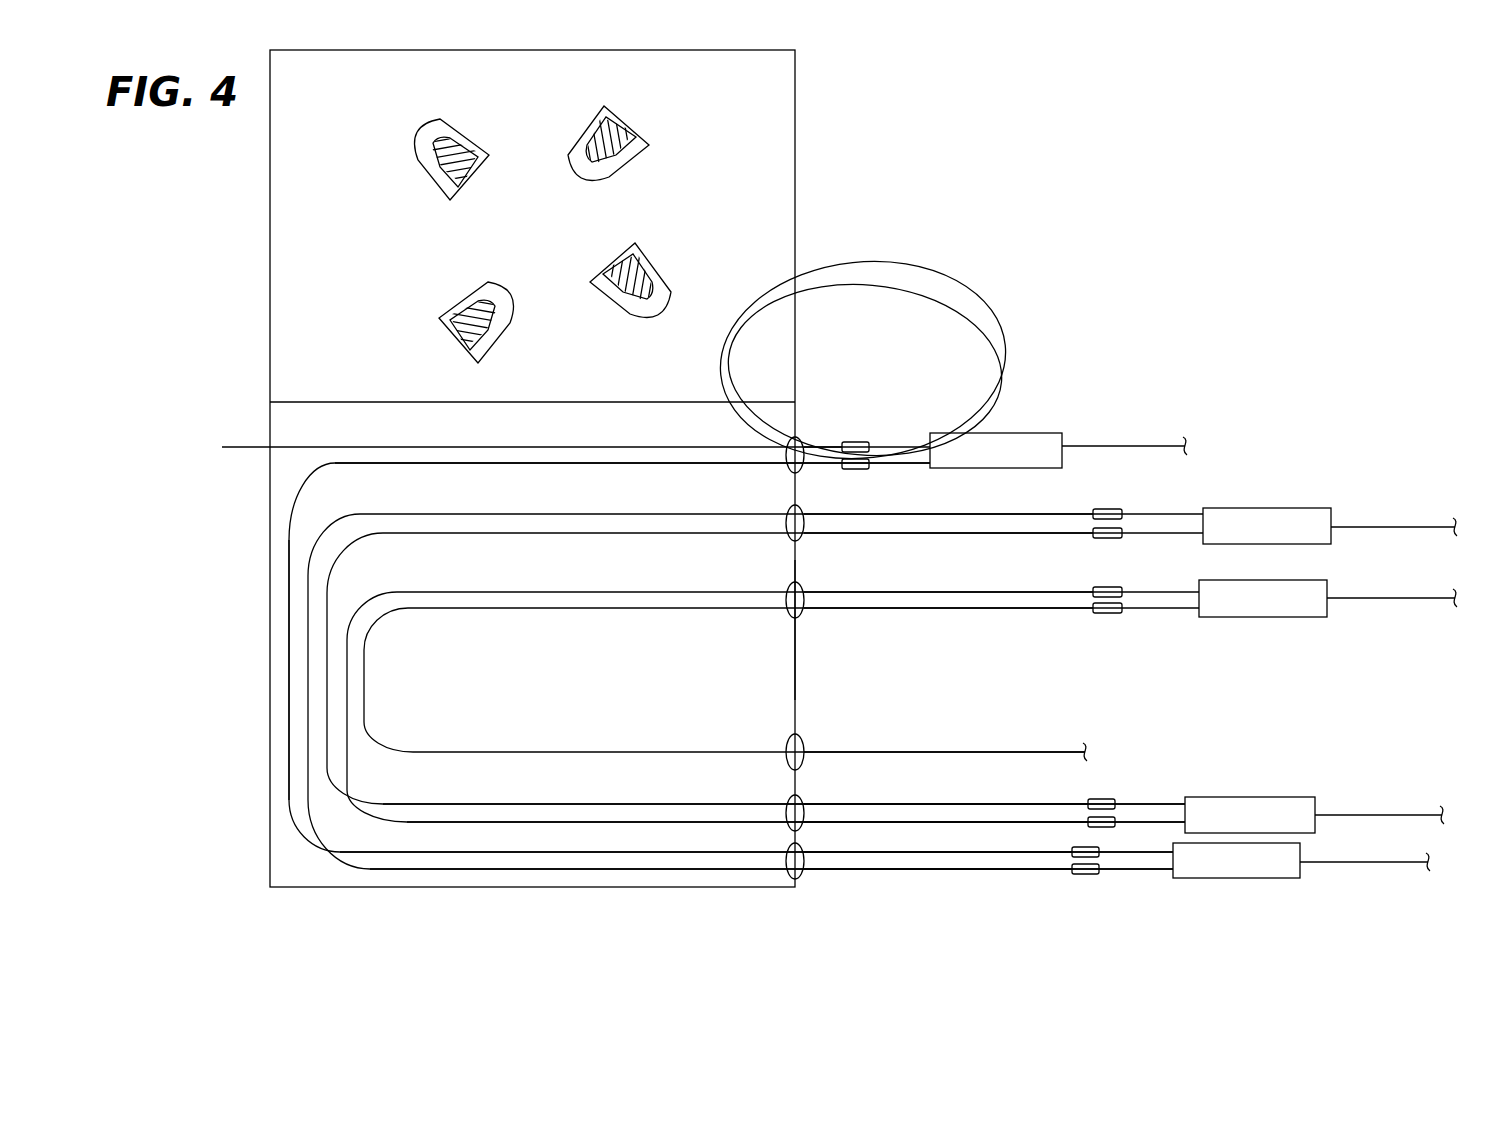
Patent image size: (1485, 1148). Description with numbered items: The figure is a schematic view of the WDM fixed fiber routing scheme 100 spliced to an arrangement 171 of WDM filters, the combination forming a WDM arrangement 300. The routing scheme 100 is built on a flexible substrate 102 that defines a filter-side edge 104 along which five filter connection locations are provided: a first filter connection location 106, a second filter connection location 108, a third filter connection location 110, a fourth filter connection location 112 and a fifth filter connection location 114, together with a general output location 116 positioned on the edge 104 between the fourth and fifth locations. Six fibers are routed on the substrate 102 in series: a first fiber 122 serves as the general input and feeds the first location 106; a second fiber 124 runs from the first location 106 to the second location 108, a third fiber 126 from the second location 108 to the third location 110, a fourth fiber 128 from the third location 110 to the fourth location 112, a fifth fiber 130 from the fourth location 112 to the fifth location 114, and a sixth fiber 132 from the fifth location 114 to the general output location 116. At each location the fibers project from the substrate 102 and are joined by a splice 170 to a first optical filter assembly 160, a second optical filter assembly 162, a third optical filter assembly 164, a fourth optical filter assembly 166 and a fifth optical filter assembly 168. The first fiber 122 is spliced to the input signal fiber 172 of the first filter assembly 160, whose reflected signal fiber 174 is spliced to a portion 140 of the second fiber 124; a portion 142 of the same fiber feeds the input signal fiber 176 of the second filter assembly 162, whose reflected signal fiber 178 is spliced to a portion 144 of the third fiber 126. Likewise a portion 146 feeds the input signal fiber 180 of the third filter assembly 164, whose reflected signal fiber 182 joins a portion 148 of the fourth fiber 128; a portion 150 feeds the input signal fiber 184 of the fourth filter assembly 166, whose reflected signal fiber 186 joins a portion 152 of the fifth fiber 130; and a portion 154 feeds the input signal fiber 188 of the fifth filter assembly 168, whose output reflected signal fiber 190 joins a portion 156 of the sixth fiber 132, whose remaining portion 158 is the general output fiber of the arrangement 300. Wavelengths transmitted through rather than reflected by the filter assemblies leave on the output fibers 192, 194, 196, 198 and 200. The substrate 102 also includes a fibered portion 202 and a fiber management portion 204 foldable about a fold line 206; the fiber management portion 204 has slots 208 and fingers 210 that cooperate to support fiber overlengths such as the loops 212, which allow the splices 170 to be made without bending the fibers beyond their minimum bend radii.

The WDM fixed fiber routing scheme 100 is at (222, 870).
The flexible substrate 102 is at (452, 878).
The filter-side edge 104 is at (797, 572).
The first filter connection location 106 is at (788, 466).
The second filter connection location 108 is at (800, 880).
The third filter connection location 110 is at (786, 537).
The fourth filter connection location 112 is at (810, 802).
The fifth filter connection location 114 is at (787, 613).
The general output location 116 is at (815, 745).
The first fiber 122 is at (585, 445).
The second fiber 124 is at (603, 465).
The third fiber 126 is at (703, 878).
The fourth fiber 128 is at (675, 536).
The fifth fiber 130 is at (668, 823).
The sixth fiber 132 is at (705, 608).
The portion of second fiber 140 is at (812, 464).
The portion of second fiber 142 is at (895, 850).
The portion of third fiber 144 is at (905, 875).
The portion of third fiber 146 is at (810, 513).
The portion of fourth fiber 148 is at (890, 535).
The portion of fourth fiber 150 is at (950, 803).
The portion of fifth fiber 152 is at (970, 823).
The portion of fifth fiber 154 is at (965, 592).
The portion of sixth fiber 156 is at (965, 609).
The portion of sixth fiber 158 is at (975, 750).
The first optical filter assembly 160 is at (1015, 434).
The second optical filter assembly 162 is at (1243, 878).
The third optical filter assembly 164 is at (1268, 508).
The fourth optical filter assembly 166 is at (1255, 797).
The fifth optical filter assembly 168 is at (1258, 617).
The splice 170 is at (855, 441).
The arrangement of WDM filters 171 is at (1351, 416).
The input signal fiber 172 is at (905, 445).
The reflected signal fiber 174 is at (935, 468).
The input signal fiber 176 is at (1143, 853).
The reflected signal fiber 178 is at (1153, 870).
The input signal fiber 180 is at (1170, 514).
The reflected signal fiber 182 is at (1185, 534).
The input signal fiber 184 is at (1163, 800).
The reflected signal fiber 186 is at (1184, 820).
The input signal fiber 188 is at (1197, 590).
The output reflected signal fiber 190 is at (1170, 612).
The output fiber 192 is at (1118, 446).
The output fiber 194 is at (1365, 863).
The output fiber 196 is at (1385, 526).
The output fiber 198 is at (1395, 815).
The output fiber 200 is at (1385, 598).
The fibered portion 202 is at (282, 707).
The fiber management portion 204 is at (788, 118).
The fold line 206 is at (375, 400).
The slots 208 is at (460, 140).
The fingers 210 is at (470, 160).
The loops 212 is at (930, 272).
The WDM arrangement 300 is at (1156, 129).